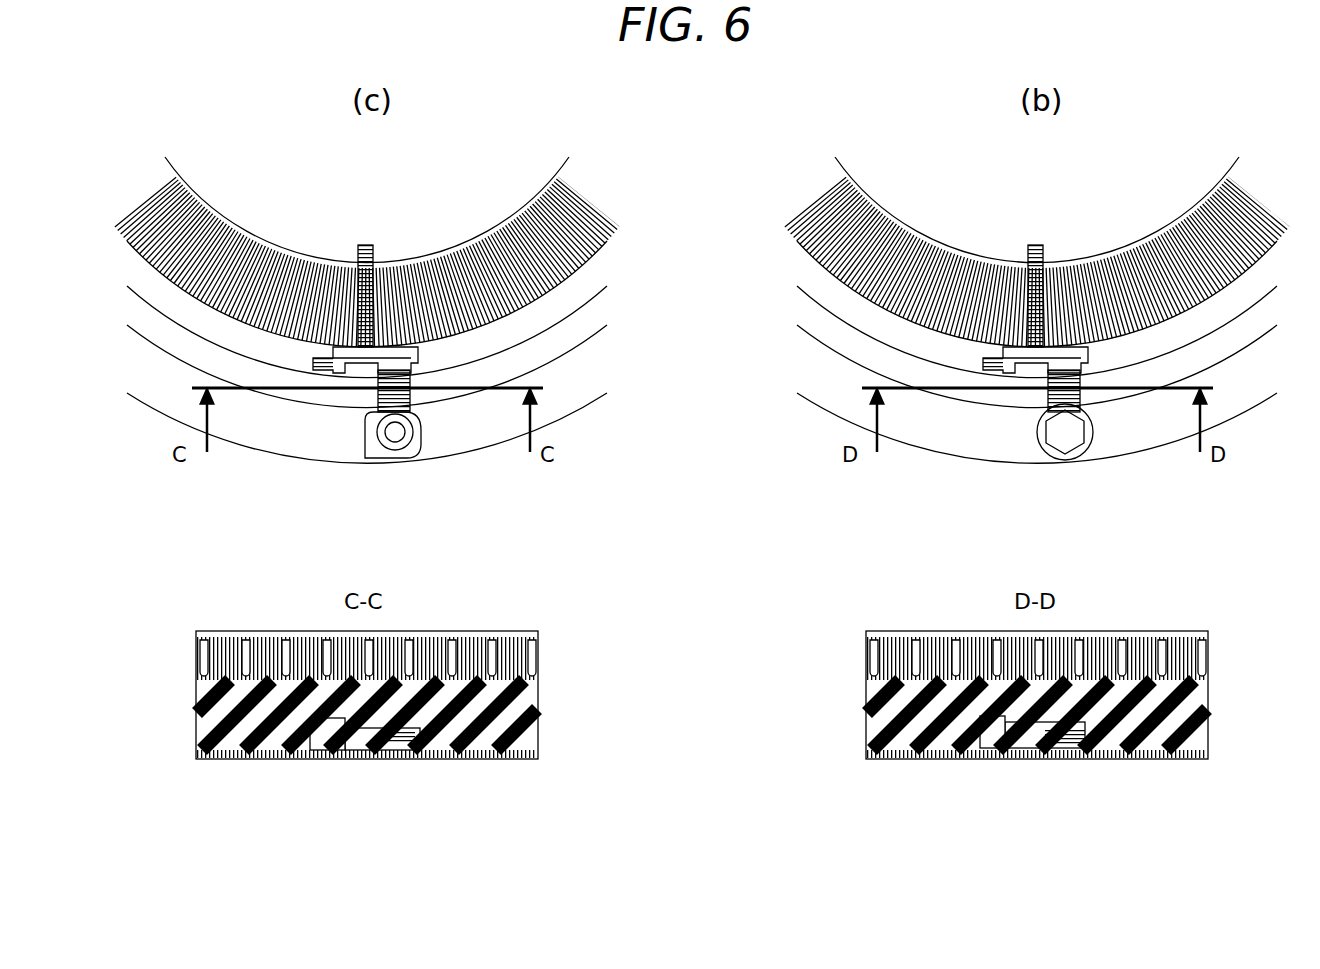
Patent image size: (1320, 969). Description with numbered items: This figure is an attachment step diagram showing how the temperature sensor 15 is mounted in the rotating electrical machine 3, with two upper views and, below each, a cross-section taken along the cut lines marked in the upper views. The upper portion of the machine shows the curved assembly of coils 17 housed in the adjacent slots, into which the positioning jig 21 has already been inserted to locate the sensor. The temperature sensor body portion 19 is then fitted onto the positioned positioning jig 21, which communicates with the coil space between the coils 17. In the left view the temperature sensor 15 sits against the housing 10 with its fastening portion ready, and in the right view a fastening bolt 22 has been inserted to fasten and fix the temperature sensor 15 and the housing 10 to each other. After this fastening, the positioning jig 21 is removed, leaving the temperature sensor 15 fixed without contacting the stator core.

The rotating electrical machine 3 is at (177, 120).
The housing 10 is at (303, 445).
The temperature sensor 15 is at (372, 450).
The coils 17 is at (305, 292).
The temperature sensor body portion 19 is at (345, 760).
The positioning jig 21 is at (365, 245).
The fastening bolt 22 is at (1062, 450).